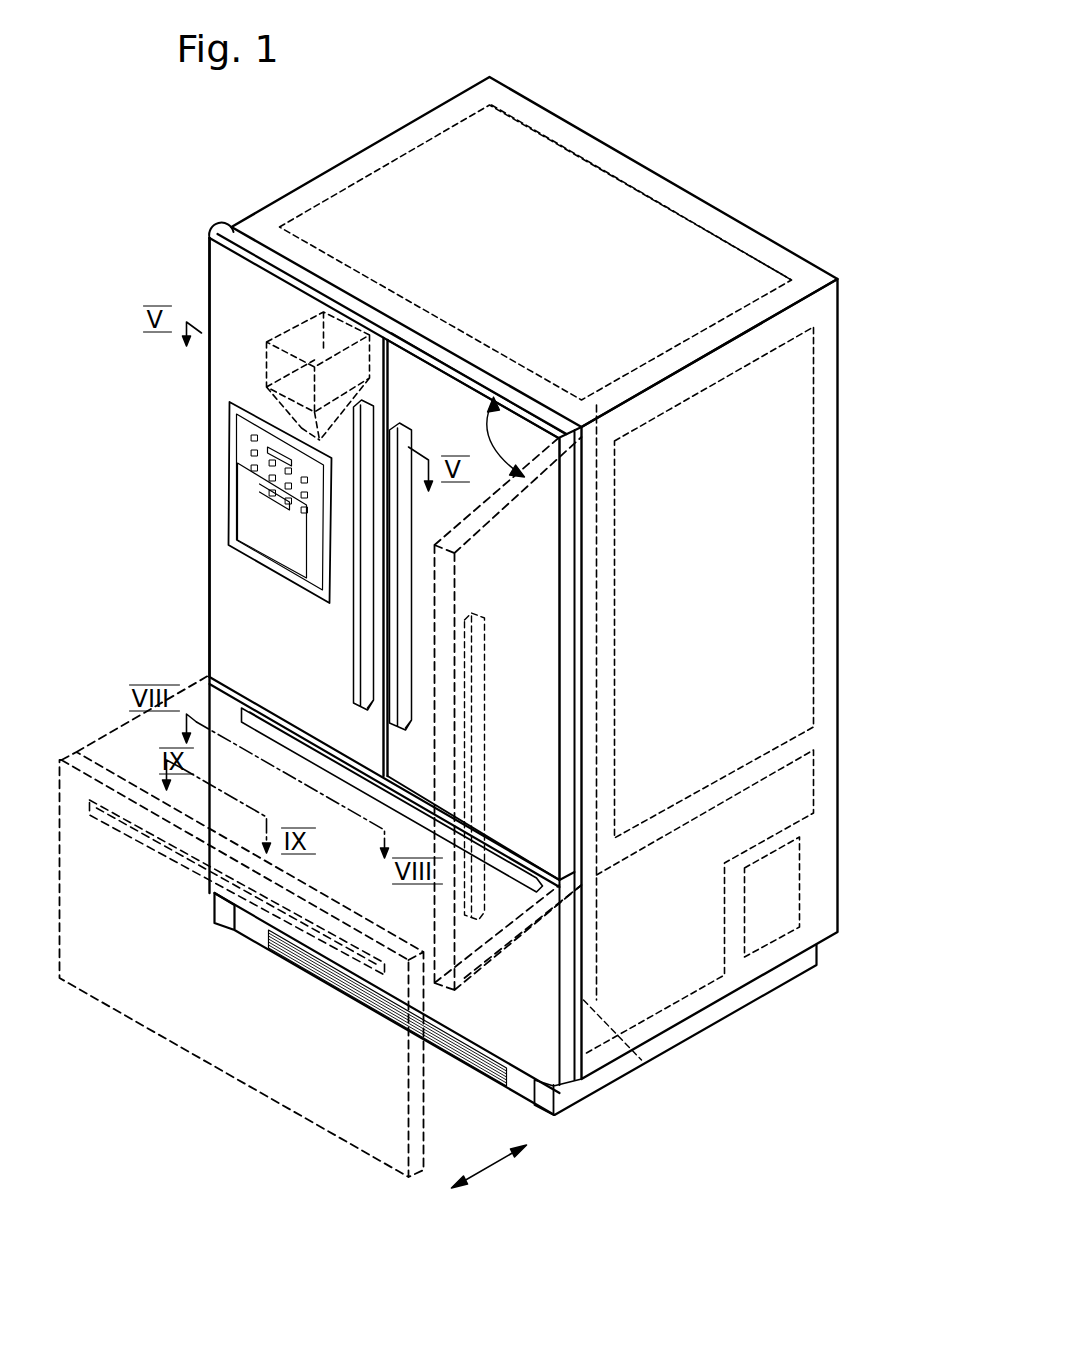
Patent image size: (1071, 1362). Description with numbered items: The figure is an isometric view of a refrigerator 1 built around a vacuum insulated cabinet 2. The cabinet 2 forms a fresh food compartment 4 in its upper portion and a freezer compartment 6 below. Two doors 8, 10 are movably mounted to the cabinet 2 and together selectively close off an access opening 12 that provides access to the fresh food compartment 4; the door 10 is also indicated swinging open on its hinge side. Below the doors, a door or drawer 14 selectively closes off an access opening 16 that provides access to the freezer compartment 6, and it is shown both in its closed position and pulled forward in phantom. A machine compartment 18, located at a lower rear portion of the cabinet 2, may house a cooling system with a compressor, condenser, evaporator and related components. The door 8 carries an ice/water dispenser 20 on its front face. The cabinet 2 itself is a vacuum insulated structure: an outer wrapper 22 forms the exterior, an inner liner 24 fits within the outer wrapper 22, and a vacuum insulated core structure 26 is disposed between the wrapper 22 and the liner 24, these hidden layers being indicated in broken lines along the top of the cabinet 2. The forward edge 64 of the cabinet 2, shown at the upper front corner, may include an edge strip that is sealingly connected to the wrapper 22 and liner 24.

The refrigerator 1 is at (663, 173).
The vacuum insulated cabinet 2 is at (825, 545).
The fresh food compartment 4 is at (780, 420).
The freezer compartment 6 is at (680, 1003).
The door 8 is at (215, 385).
The door 10 is at (513, 428).
The access opening 12 is at (463, 348).
The door or drawer 14 is at (545, 1060).
The access opening 16 is at (582, 987).
The machine compartment 18 is at (800, 904).
The ice/water dispenser 20 is at (230, 518).
The outer wrapper 22 is at (397, 153).
The inner liner 24 is at (550, 143).
The vacuum insulated core structure 26 is at (602, 158).
The forward edge 64 is at (217, 233).